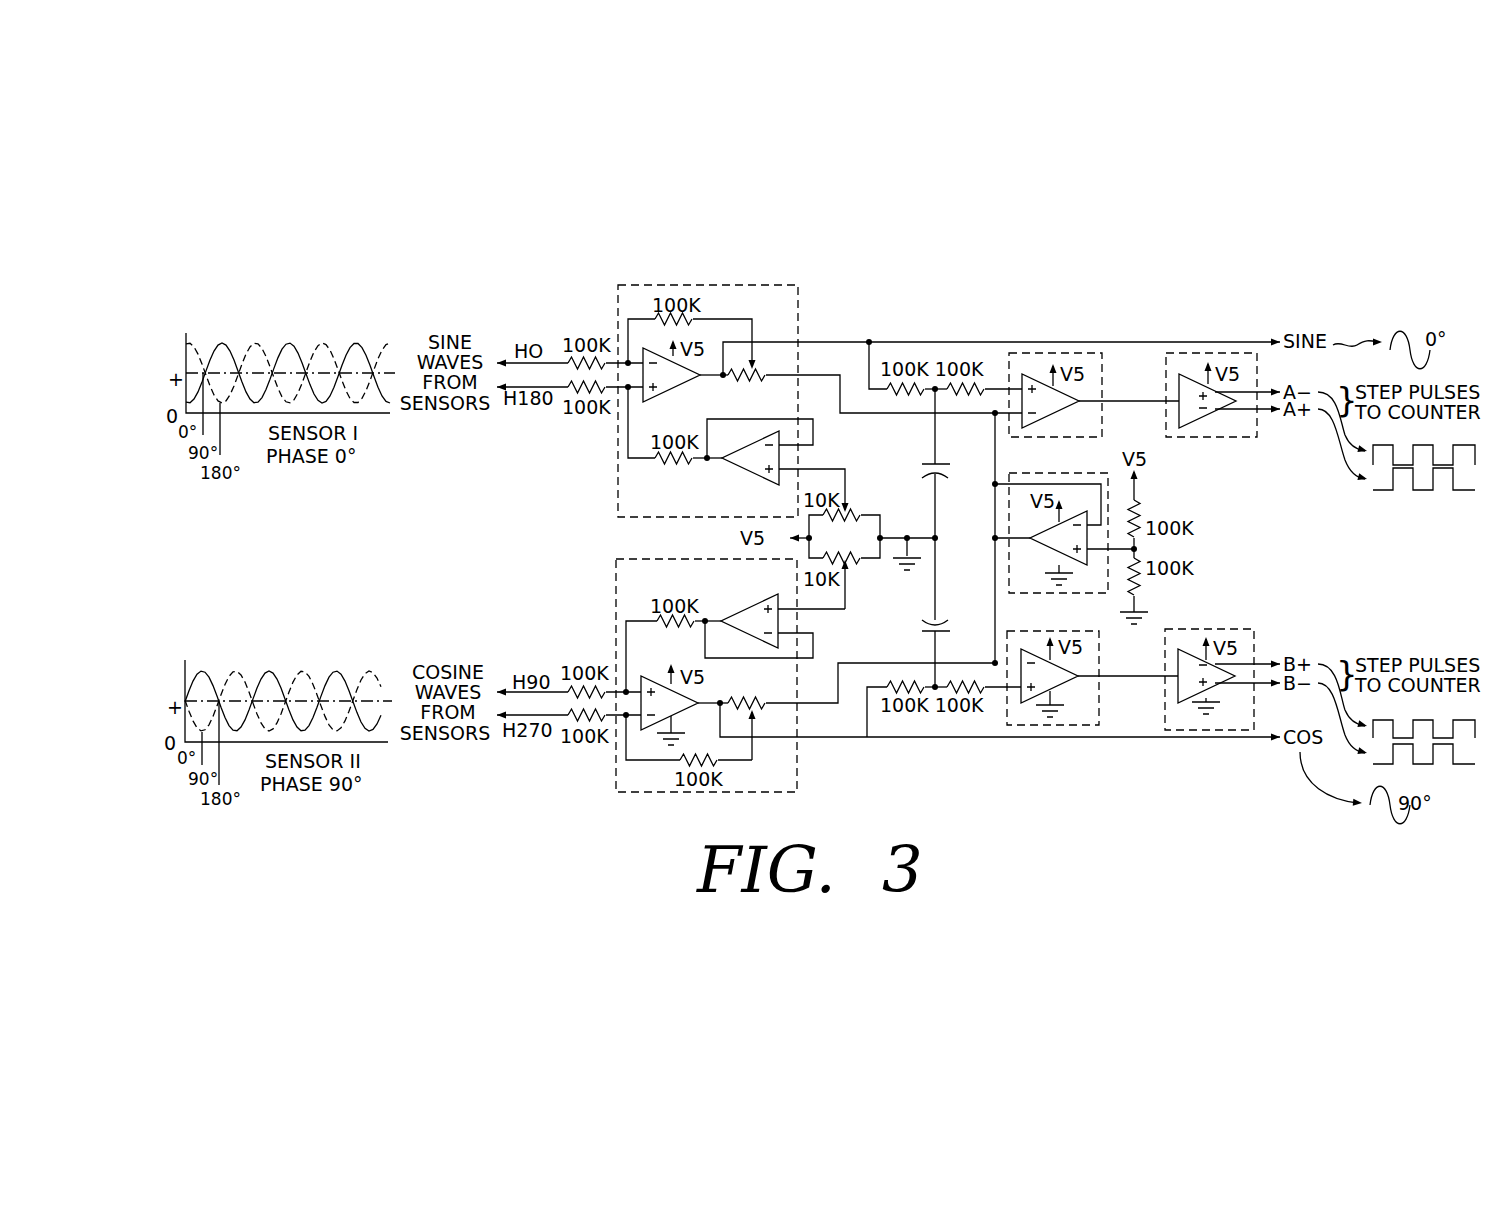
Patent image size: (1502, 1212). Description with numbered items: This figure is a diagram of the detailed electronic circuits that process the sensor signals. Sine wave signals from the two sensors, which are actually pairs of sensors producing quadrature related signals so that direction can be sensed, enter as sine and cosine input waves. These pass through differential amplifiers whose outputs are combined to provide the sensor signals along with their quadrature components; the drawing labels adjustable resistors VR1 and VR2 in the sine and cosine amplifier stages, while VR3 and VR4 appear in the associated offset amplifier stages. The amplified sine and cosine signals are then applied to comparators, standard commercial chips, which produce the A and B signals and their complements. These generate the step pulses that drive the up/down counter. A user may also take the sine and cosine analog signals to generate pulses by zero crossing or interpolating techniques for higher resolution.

The variable resistor VR1, 5K (sine amplitude adjust) VR1 is at (861, 391).
The variable resistor VR2, 5K (cosine amplitude adjust) VR2 is at (846, 711).
The variable resistor VR3 offset amplifier VR3 is at (776, 465).
The variable resistor VR4 offset amplifier VR4 is at (773, 613).